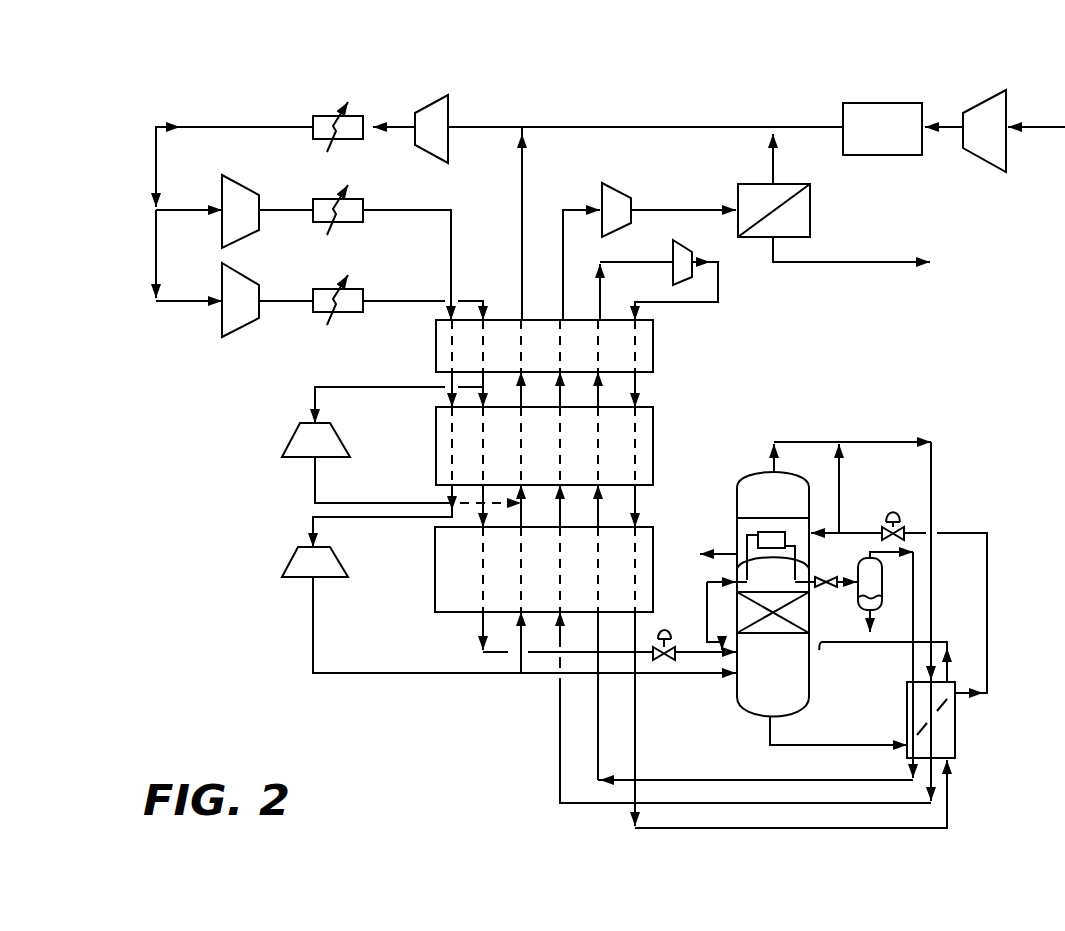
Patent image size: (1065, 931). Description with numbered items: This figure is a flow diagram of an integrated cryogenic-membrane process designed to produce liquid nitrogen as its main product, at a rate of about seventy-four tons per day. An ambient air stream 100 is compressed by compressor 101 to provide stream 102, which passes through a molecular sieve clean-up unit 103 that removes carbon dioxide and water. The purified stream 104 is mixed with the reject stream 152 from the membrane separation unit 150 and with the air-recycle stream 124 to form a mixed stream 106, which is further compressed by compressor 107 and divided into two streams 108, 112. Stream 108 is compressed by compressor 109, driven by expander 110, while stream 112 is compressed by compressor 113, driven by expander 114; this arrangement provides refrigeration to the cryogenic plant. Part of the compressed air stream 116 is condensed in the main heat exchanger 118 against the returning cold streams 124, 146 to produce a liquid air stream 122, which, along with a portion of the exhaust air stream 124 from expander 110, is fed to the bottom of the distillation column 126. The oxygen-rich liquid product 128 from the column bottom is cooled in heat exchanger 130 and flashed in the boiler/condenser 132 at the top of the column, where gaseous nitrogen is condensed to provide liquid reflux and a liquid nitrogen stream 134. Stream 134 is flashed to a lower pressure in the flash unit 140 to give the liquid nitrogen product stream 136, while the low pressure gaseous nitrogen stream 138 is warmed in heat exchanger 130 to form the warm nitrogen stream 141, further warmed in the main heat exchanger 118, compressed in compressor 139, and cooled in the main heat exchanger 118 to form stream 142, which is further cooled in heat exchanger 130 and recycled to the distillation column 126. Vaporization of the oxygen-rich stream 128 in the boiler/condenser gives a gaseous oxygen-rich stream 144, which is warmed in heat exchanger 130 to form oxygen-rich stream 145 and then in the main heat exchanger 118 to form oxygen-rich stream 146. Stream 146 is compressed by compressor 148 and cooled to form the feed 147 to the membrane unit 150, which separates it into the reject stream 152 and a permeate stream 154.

The ambient air stream 100 is at (1044, 127).
The compressor 101 is at (984, 131).
The compressed air stream 102 is at (950, 128).
The molecular sieve clean-up unit 103 is at (882, 129).
The purified stream 104 is at (806, 128).
The mixed stream 106 is at (508, 123).
The compressor 107 is at (410, 129).
The stream 108 is at (186, 201).
The compressor 109 is at (240, 211).
The expander 110 is at (367, 531).
The stream 112 is at (184, 291).
The compressor 113 is at (240, 300).
The expander 114 is at (401, 445).
The compressed air stream 116 is at (487, 355).
The main heat exchanger 118 is at (544, 466).
The liquid air stream 122 is at (479, 641).
The air-recycle stream 124 is at (526, 168).
The distillation column 126 is at (754, 594).
The oxygen-rich liquid product 128 is at (868, 533).
The heat exchanger 130 is at (955, 721).
The boiler/condenser 132 is at (757, 534).
The liquid nitrogen stream 134 is at (841, 586).
The liquid nitrogen product stream 136 is at (864, 618).
The low pressure gaseous nitrogen stream 138 is at (912, 654).
The compressor 139 is at (679, 246).
The flash unit 140 is at (860, 566).
The warm nitrogen stream 141 is at (741, 780).
The stream 142 is at (706, 603).
The gaseous oxygen-rich stream 144 is at (850, 442).
The oxygen-rich stream 145 is at (841, 803).
The oxygen-rich stream 146 is at (569, 205).
The feed 147 is at (700, 206).
The compressor 148 is at (627, 196).
The membrane separation unit 150 is at (774, 210).
The reject stream 152 is at (786, 150).
The permeate stream 154 is at (852, 262).